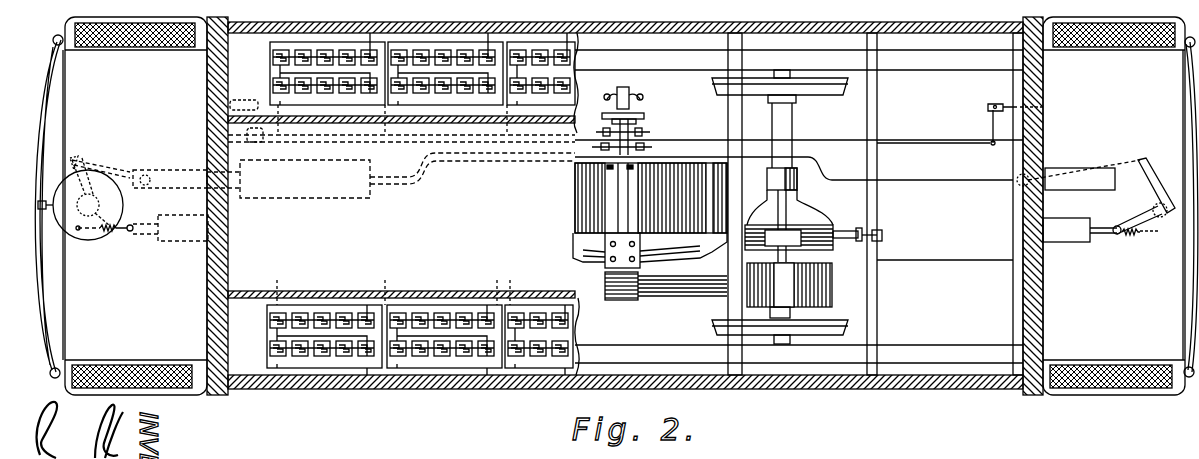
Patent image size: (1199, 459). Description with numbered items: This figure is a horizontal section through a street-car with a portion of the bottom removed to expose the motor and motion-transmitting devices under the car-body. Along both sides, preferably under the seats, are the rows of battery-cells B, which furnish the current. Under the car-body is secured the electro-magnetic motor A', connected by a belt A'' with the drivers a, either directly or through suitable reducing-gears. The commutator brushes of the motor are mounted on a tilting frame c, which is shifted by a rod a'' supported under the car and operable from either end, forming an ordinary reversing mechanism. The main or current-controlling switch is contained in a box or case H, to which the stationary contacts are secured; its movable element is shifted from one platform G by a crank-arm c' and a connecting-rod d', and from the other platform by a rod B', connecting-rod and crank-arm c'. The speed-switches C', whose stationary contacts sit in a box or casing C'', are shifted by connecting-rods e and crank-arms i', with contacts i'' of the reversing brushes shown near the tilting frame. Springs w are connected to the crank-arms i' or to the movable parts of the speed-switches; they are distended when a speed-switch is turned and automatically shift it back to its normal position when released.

The platform G is at (616, 206).
The battery-cells B is at (402, 204).
The rod B' is at (1032, 185).
The electro-magnetic motor A' is at (705, 287).
The belt A'' is at (666, 293).
The drivers a is at (477, 207).
The rod a'' is at (636, 130).
The tilting frame c is at (633, 121).
The crank-arm c' is at (613, 186).
The speed-switches C' is at (678, 197).
The box or casing C'' is at (183, 228).
The rod d' is at (1078, 173).
The connecting-rods e is at (1142, 222).
The box or case H is at (186, 179).
The crank-arms i' is at (608, 179).
The contact i'' is at (624, 146).
The springs w is at (629, 239).